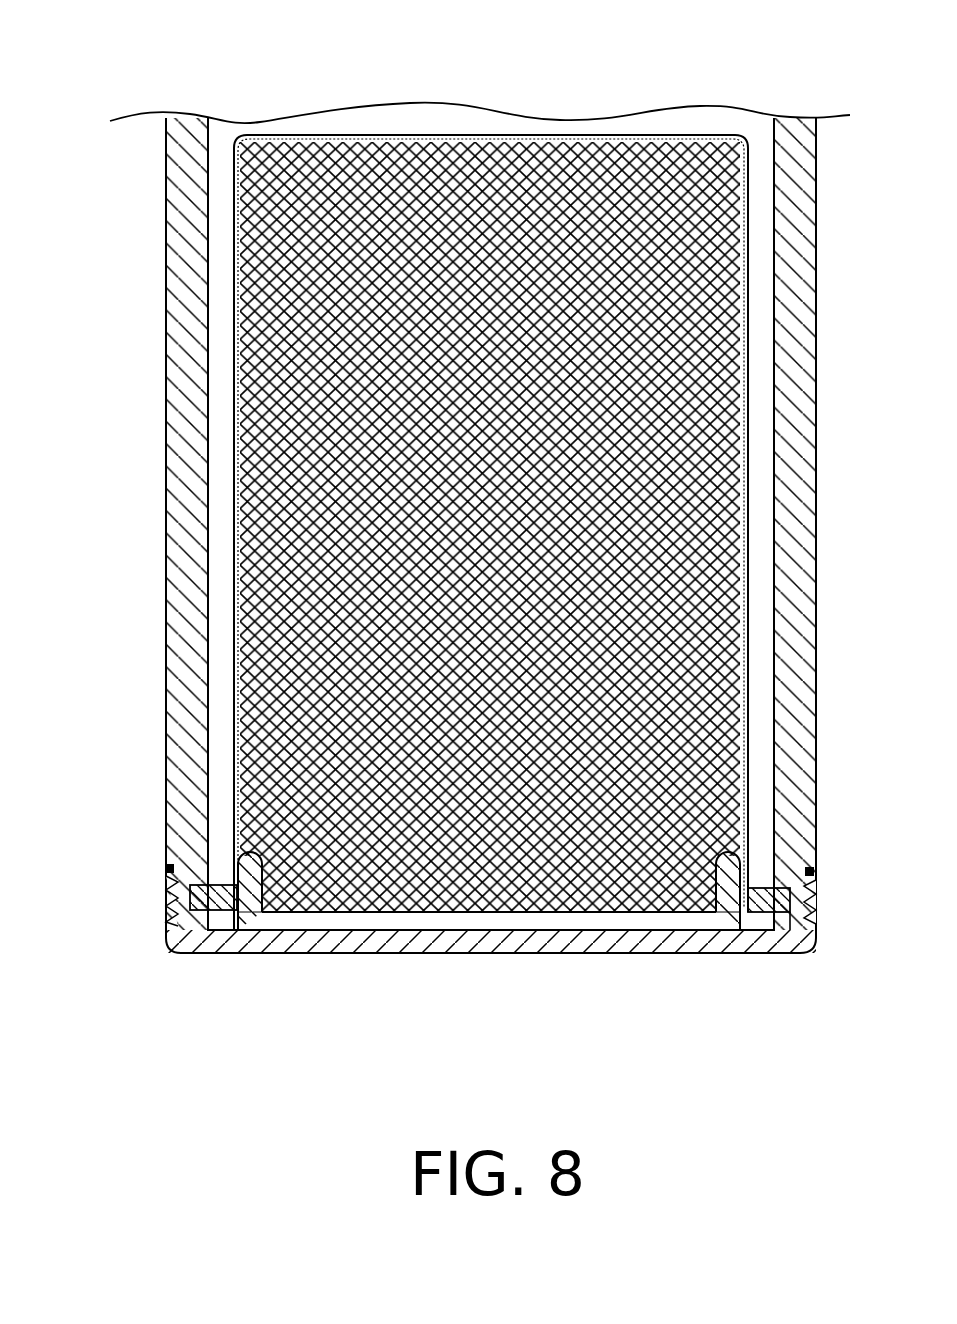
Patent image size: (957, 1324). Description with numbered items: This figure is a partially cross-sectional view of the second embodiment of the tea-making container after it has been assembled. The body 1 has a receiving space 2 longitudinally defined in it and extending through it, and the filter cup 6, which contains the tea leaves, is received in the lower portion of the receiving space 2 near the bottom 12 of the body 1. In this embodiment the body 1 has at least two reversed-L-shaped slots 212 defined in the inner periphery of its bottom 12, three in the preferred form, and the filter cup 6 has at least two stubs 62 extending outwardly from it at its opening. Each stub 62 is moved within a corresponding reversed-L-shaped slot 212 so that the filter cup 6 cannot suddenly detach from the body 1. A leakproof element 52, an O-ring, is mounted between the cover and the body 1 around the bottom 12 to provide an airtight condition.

The body 1 is at (158, 486).
The receiving space 2 is at (755, 135).
The filter cup 6 is at (548, 119).
The bottom 12 is at (508, 925).
The leakproof element 52 is at (166, 868).
The stub 62 is at (759, 905).
The reversed-L-shaped slot 212 is at (757, 886).